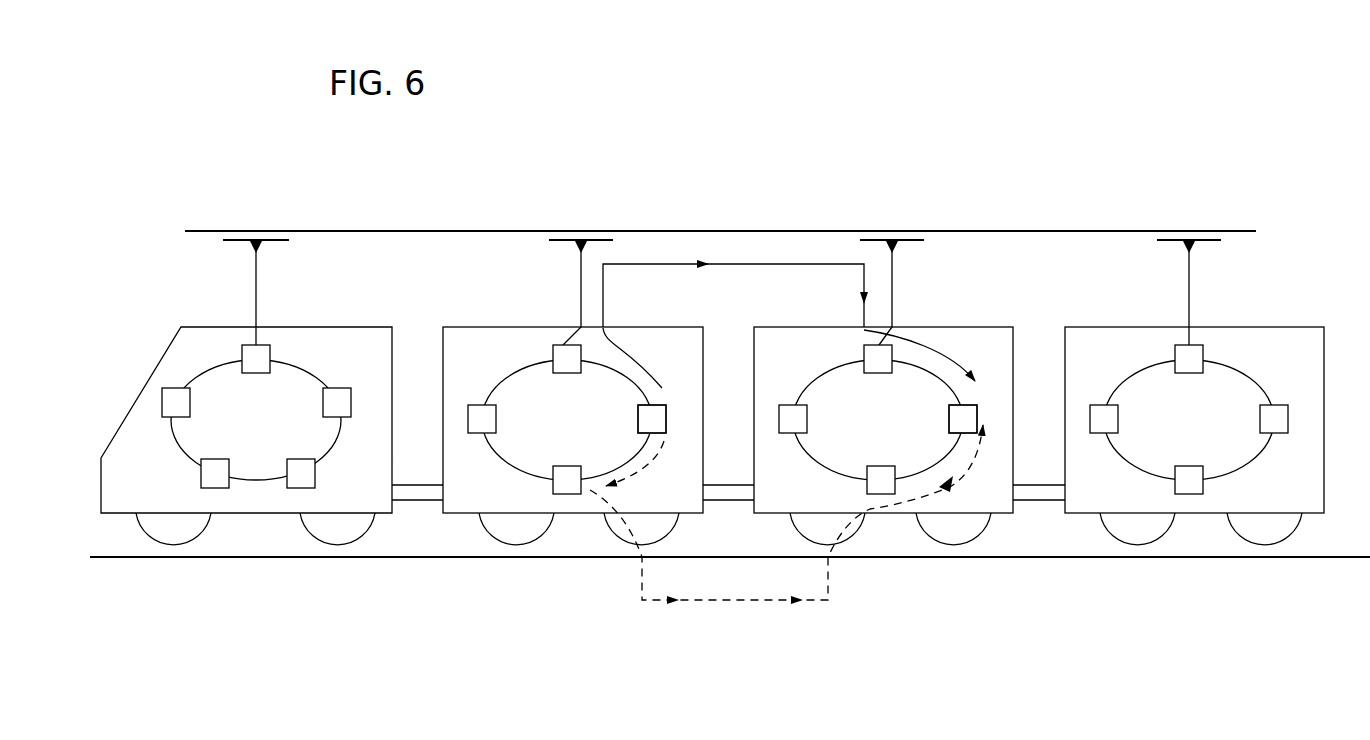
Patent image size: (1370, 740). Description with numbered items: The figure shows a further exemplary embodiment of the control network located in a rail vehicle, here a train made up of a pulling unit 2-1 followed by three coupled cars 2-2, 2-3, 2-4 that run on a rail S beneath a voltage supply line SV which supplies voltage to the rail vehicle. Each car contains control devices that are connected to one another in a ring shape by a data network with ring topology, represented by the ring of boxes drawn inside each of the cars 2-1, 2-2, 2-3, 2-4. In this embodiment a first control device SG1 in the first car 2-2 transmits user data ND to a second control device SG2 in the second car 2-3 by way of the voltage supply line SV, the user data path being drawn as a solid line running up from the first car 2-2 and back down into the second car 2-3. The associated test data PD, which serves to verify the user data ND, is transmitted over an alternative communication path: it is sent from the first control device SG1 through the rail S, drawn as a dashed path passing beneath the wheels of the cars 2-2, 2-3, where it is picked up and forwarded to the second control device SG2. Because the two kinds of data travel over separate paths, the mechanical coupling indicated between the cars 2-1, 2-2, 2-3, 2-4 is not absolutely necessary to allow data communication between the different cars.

The pulling unit 2-1 is at (237, 437).
The first car 2-2 is at (548, 437).
The second car 2-3 is at (859, 437).
The car 2-4 is at (1170, 437).
The voltage supply line SV is at (1054, 229).
The rail S is at (1324, 560).
The user data ND is at (789, 324).
The test data PD is at (786, 530).
The first control device SG1 is at (660, 419).
The second control device SG2 is at (965, 420).